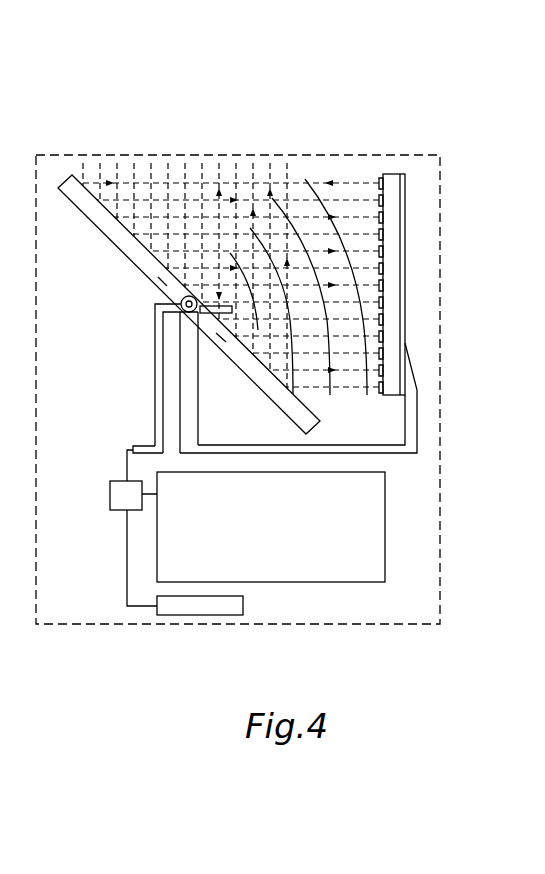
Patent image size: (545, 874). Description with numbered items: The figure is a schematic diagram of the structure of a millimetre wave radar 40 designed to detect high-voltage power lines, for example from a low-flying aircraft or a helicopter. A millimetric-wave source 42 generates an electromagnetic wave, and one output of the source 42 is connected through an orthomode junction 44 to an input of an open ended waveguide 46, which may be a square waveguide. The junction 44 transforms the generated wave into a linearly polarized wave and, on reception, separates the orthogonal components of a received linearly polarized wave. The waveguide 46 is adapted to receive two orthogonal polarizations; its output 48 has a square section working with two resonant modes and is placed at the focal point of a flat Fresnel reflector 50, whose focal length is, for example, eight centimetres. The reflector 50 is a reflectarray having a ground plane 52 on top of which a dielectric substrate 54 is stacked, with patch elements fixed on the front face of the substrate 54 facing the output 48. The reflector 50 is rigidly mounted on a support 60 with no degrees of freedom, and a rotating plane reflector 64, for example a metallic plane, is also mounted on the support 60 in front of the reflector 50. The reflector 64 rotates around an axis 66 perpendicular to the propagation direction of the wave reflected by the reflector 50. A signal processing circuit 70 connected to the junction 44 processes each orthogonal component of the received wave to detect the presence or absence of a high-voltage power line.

The millimetre wave radar 40 is at (279, 148).
The millimetric-wave source 42 is at (190, 607).
The orthomode junction 44 is at (125, 491).
The open ended waveguide 46 is at (155, 352).
The output of waveguide 48 is at (224, 331).
The flat Fresnel reflector 50 is at (452, 237).
The ground plane 52 is at (405, 203).
The dielectric substrate 54 is at (395, 233).
The support 60 is at (388, 447).
The rotating plane reflector 64 is at (66, 183).
The axis 66 is at (182, 301).
The signal processing circuit 70 is at (388, 516).